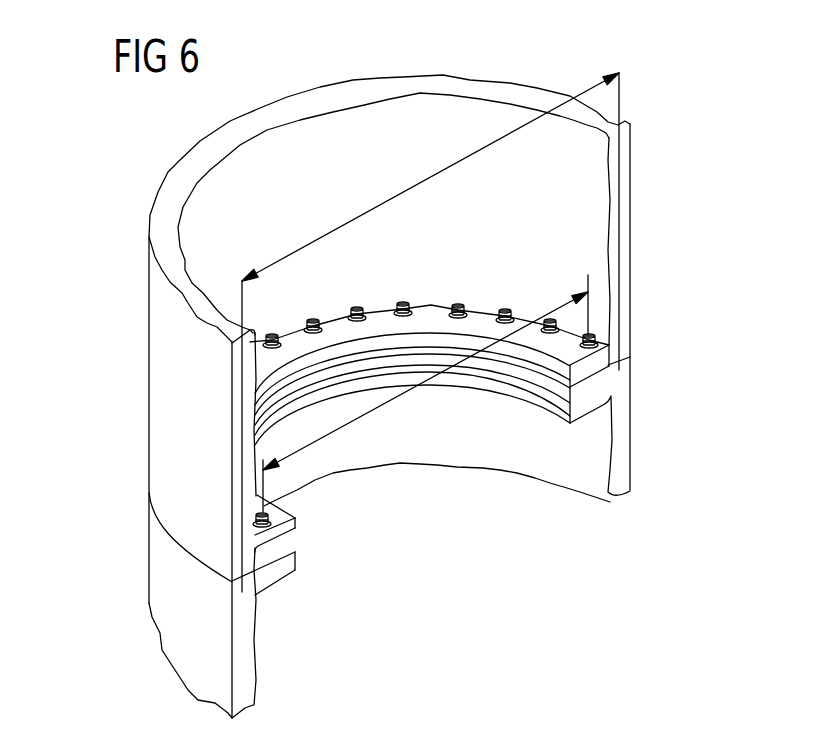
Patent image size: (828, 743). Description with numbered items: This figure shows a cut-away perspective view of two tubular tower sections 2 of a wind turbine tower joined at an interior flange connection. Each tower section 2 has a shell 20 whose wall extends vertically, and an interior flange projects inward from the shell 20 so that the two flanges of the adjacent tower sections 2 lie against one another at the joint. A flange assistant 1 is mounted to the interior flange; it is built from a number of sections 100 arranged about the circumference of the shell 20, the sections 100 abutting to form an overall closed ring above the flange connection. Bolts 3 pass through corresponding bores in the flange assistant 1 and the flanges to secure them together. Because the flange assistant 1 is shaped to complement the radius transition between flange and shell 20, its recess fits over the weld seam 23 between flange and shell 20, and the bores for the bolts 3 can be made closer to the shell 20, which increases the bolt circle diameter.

The flange assistant 1 is at (275, 582).
The tower section 2 is at (160, 330).
The bolt 3 is at (431, 392).
The shell 20 is at (622, 165).
The weld seam 23 is at (612, 449).
The section 100 is at (340, 320).